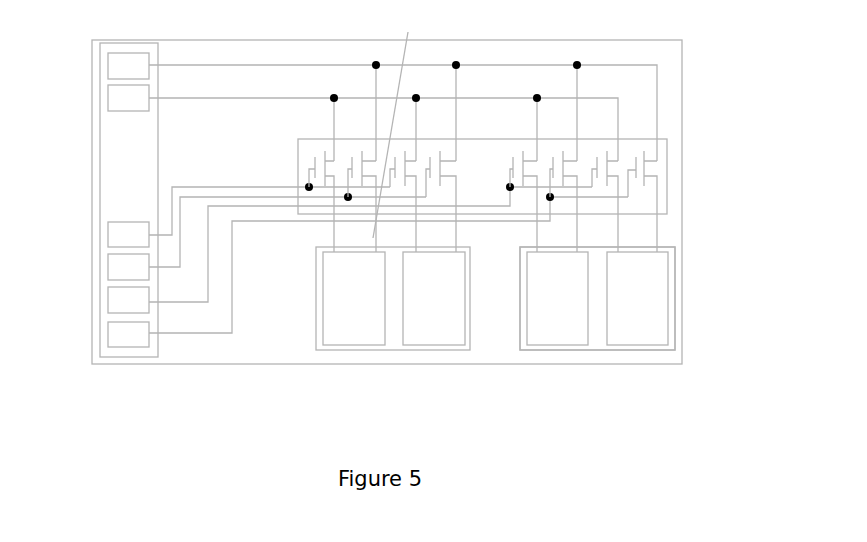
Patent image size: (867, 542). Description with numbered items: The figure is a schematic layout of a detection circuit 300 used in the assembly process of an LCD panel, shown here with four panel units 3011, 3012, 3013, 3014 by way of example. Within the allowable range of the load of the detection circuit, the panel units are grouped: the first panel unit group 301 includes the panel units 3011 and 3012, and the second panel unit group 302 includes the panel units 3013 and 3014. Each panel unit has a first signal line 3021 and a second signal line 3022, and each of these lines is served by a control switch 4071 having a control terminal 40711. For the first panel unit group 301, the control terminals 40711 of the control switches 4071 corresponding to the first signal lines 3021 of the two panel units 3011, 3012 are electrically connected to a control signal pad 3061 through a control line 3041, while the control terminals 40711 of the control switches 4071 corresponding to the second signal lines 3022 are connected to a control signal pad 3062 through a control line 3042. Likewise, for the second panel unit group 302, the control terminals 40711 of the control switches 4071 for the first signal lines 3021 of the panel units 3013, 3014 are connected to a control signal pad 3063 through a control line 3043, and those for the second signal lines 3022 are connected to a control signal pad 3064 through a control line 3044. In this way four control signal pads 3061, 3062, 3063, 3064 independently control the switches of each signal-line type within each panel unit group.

The array substrate 300 is at (488, 40).
The first panel unit group 301 is at (470, 349).
The panel unit 3011 is at (355, 345).
The panel unit 3012 is at (435, 345).
The panel unit 3013 is at (557, 345).
The panel unit 3014 is at (637, 345).
The second panel unit group 302 is at (675, 335).
The first signal line 3021 is at (336, 226).
The second signal line 3022 is at (713, 235).
The control line 3041 is at (172, 205).
The control line 3042 is at (180, 233).
The control line 3043 is at (178, 302).
The control line 3044 is at (218, 333).
The control signal pad 3061 is at (108, 233).
The control signal pad 3062 is at (108, 265).
The control signal pad 3063 is at (108, 298).
The control signal pad 3064 is at (108, 333).
The control switch 4071 is at (316, 160).
The control terminal 40711 is at (630, 171).